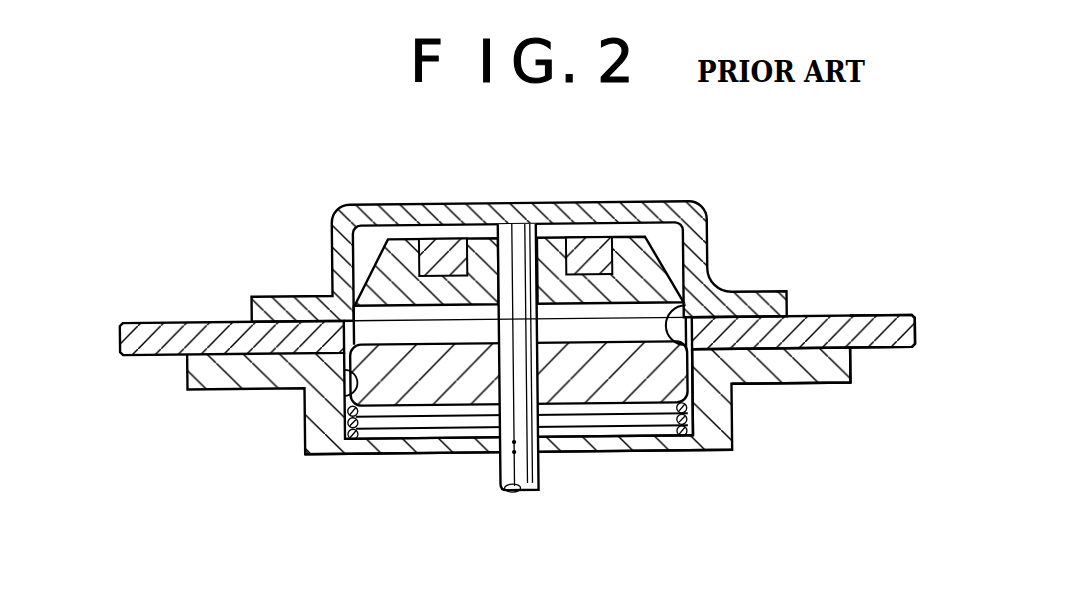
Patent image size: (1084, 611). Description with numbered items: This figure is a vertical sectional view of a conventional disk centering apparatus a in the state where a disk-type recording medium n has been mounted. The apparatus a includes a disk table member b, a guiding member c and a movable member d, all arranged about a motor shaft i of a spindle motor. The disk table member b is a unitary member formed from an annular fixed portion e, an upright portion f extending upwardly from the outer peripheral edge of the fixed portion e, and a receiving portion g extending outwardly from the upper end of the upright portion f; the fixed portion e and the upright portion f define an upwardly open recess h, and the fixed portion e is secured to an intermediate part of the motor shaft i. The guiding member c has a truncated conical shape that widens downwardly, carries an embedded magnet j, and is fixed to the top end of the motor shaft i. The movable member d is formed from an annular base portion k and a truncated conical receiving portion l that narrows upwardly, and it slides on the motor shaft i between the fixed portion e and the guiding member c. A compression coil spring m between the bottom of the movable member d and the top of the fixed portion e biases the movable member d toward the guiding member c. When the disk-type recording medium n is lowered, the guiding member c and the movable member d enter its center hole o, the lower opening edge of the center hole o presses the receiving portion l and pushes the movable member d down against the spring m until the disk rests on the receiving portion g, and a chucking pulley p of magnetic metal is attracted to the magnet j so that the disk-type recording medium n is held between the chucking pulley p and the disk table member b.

The disk centering apparatus a is at (348, 493).
The disk table member b is at (828, 353).
The guiding member c is at (653, 243).
The movable member d is at (700, 364).
The fixed portion e is at (604, 443).
The upright portion f is at (720, 432).
The receiving portion g is at (815, 375).
The recess h is at (342, 400).
The motor shaft i is at (513, 475).
The magnet j is at (440, 255).
The base portion k is at (405, 390).
The receiving portion l is at (350, 345).
The compression coil spring m is at (653, 422).
The disk-type recording medium n is at (882, 325).
The center hole o is at (686, 300).
The chucking pulley p is at (580, 213).